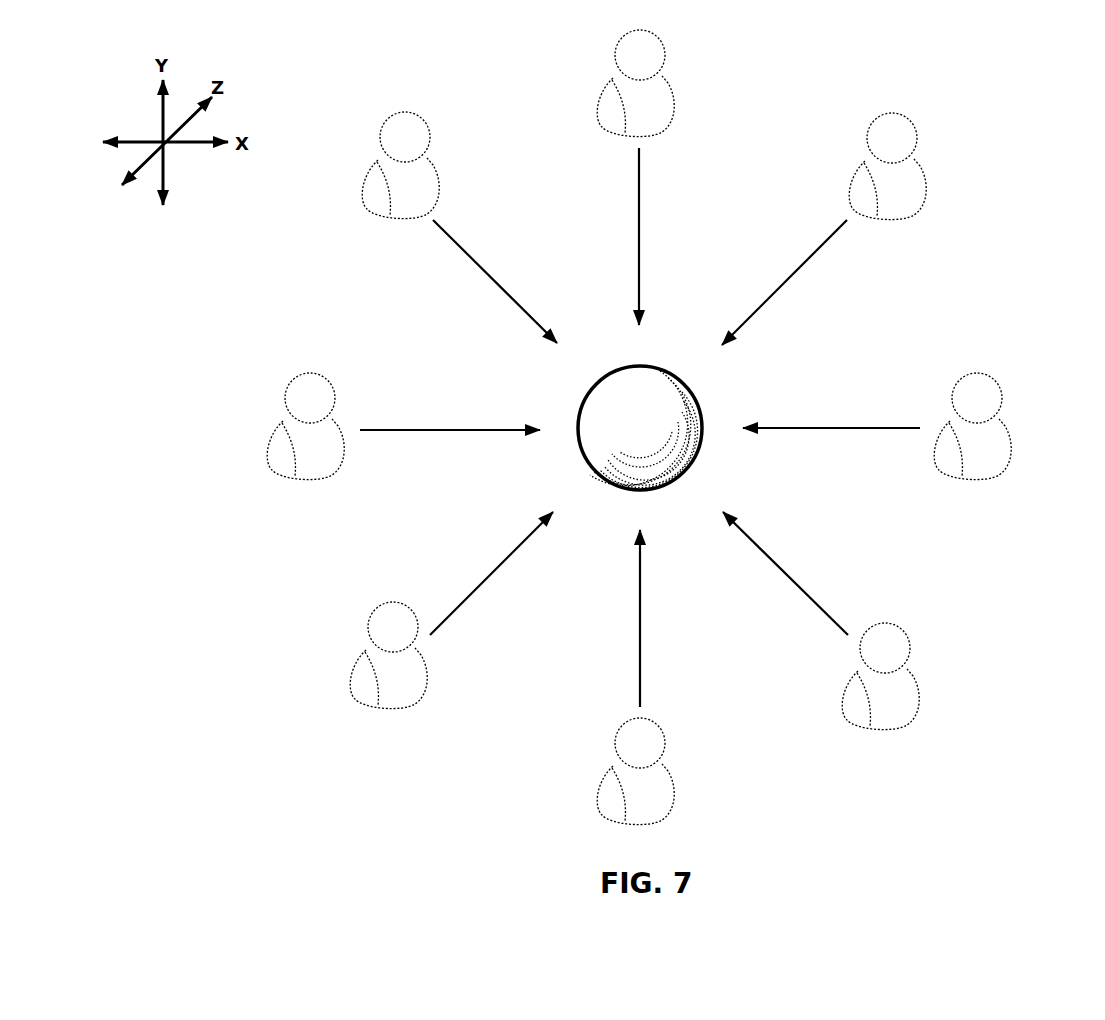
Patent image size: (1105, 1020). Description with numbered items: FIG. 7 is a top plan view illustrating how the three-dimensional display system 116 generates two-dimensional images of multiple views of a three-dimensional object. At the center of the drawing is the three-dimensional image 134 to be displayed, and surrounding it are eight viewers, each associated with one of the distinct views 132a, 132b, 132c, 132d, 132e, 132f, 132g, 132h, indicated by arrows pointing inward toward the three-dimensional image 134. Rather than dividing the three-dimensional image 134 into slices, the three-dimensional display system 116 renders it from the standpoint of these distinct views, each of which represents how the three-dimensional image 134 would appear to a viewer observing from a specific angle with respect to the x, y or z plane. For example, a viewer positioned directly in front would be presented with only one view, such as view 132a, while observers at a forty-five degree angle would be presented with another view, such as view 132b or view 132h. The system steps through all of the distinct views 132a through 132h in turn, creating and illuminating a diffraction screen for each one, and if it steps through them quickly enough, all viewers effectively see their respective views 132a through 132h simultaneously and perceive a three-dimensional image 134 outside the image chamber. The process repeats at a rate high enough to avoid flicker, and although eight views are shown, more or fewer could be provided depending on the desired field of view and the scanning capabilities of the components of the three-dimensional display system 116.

The three-dimensional display system 116 is at (1005, 92).
The 3-D image 134 is at (698, 400).
The distinct view 132a is at (639, 199).
The distinct view 132b is at (805, 265).
The distinct view 132c is at (867, 430).
The distinct view 132d is at (793, 585).
The distinct view 132e is at (640, 645).
The distinct view 132f is at (483, 580).
The distinct view 132g is at (420, 430).
The distinct view 132h is at (483, 272).